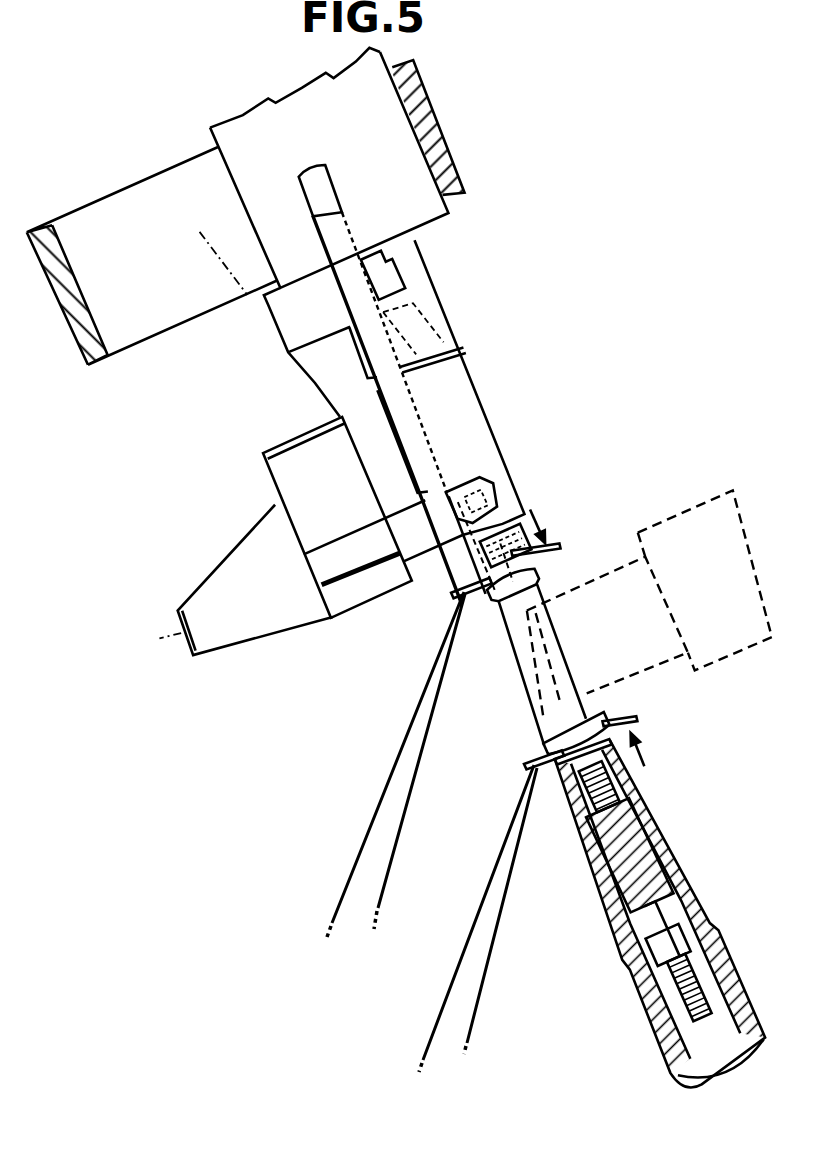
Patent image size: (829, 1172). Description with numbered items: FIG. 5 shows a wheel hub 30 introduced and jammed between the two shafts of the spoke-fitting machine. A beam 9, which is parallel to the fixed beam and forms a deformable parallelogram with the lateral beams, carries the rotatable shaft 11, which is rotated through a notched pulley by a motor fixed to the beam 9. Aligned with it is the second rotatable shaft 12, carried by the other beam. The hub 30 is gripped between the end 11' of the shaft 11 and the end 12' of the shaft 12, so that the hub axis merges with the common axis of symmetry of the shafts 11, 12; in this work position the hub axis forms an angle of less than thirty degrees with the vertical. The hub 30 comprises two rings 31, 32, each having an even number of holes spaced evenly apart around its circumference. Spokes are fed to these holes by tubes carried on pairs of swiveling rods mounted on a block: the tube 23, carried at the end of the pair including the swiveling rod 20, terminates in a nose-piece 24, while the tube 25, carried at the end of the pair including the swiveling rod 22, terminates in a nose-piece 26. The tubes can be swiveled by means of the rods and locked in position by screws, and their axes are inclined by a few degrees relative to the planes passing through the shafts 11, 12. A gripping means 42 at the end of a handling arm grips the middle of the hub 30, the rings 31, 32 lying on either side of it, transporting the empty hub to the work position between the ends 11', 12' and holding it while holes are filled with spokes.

The beam 9 is at (247, 132).
The shaft 11 is at (299, 457).
The end of shaft 11 11' is at (530, 507).
The shaft 12 is at (654, 910).
The end of shaft 12 12' is at (616, 720).
The swiveling rod 20 is at (493, 485).
The swiveling rod 22 is at (387, 293).
The tube 23 is at (347, 247).
The nose-piece 24 is at (537, 757).
The tube 25 is at (322, 195).
The nose-piece 26 is at (452, 583).
The wheel hub 30 is at (567, 653).
The ring 31 is at (560, 543).
The ring 32 is at (633, 723).
The gripping means 42 is at (593, 573).